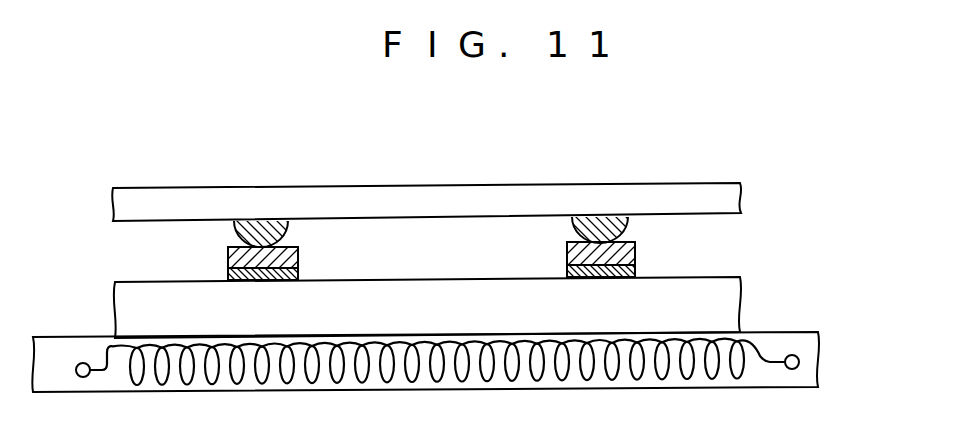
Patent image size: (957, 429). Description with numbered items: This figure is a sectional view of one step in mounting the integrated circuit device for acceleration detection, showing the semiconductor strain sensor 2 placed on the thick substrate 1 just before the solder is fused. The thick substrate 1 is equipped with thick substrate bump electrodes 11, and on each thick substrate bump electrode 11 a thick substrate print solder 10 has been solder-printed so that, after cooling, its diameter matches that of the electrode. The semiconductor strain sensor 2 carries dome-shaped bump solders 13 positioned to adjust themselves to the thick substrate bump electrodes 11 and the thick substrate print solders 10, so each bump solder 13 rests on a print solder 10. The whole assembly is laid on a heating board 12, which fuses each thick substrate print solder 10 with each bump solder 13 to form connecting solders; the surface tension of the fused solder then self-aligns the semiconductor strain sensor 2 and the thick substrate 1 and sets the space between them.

The thick substrate 1 is at (722, 310).
The semiconductor strain sensor 2 is at (722, 203).
The thick substrate print solder 10 is at (297, 258).
The thick substrate bump electrode 11 is at (232, 277).
The heating board 12 is at (800, 345).
The bump solder 13 is at (260, 221).